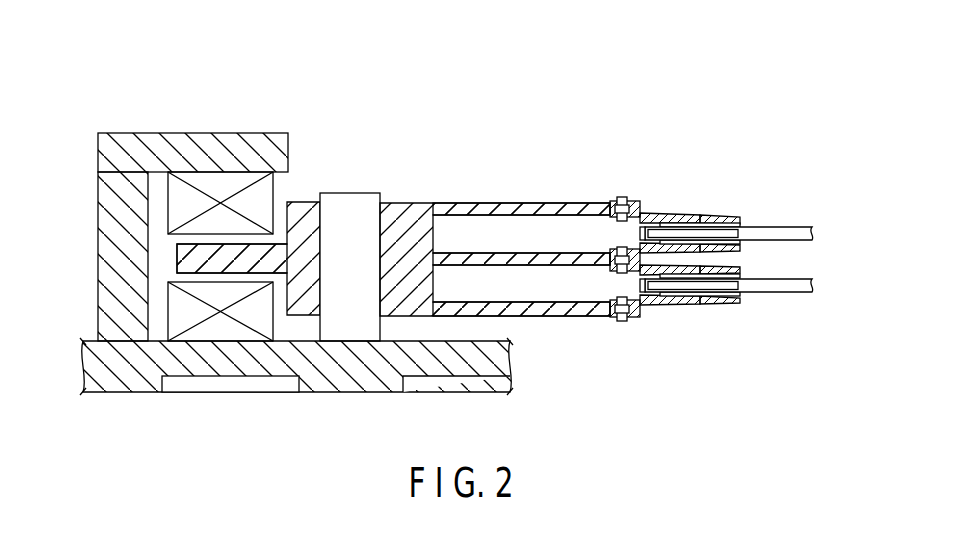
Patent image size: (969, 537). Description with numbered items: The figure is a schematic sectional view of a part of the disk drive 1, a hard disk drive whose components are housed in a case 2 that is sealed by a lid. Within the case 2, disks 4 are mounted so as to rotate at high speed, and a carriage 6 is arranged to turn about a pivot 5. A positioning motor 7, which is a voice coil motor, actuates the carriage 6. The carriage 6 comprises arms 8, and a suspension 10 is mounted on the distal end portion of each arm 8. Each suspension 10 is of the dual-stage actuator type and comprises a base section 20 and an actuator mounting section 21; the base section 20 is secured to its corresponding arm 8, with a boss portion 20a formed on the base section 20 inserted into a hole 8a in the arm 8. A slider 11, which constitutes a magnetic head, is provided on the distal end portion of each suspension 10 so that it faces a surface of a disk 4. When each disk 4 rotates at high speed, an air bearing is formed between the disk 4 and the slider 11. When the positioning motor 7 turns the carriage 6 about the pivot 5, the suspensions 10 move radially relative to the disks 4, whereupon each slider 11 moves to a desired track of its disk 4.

The disk drive 1 is at (235, 89).
The case 2 is at (133, 393).
The disk 4 is at (798, 227).
The pivot 5 is at (350, 200).
The carriage 6 is at (481, 196).
The positioning motor 7 is at (218, 330).
The arm 8 is at (562, 203).
The hole 8a is at (622, 201).
The suspension 10 is at (713, 215).
The slider 11 is at (755, 214).
The base section 20 is at (641, 245).
The boss portion 20a is at (615, 203).
The actuator mounting section 21 is at (667, 213).